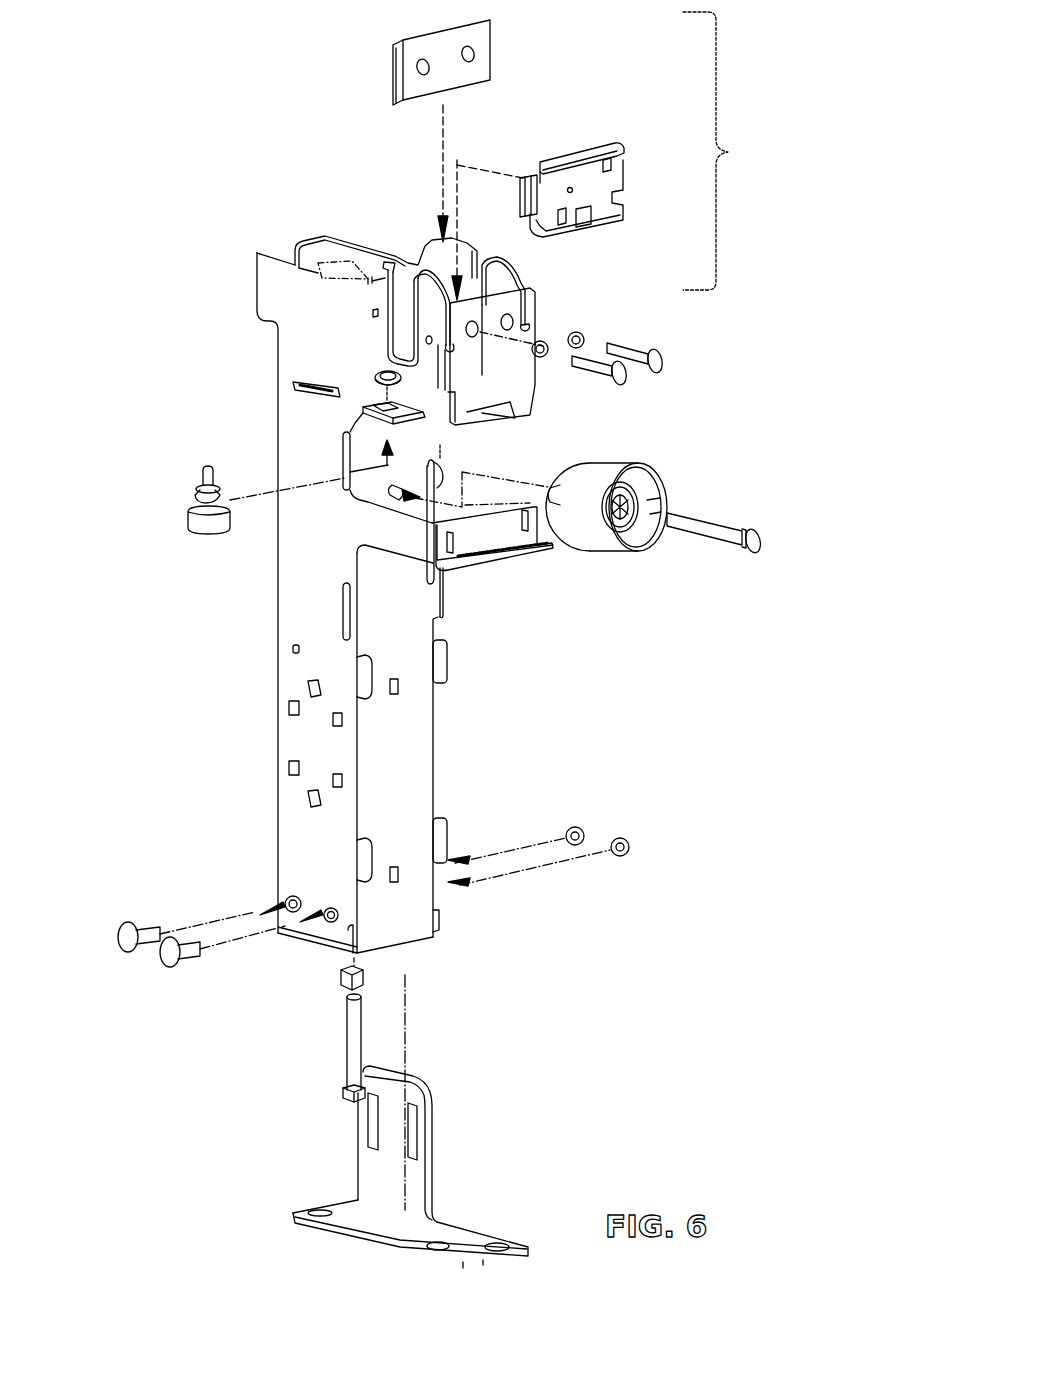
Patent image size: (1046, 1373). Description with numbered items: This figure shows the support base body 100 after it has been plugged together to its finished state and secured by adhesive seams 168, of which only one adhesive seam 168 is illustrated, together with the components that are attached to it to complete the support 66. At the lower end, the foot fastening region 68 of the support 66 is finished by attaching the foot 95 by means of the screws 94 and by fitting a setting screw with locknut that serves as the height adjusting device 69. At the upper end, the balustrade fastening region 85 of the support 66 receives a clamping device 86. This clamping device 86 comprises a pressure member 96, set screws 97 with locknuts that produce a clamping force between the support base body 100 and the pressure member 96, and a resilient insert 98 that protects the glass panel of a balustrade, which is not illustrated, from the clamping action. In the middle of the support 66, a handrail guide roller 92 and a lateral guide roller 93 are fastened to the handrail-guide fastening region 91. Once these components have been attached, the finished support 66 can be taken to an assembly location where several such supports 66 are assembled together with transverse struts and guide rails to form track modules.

The support 66 is at (235, 243).
The foot fastening region 68 is at (462, 1116).
The height adjusting device 69 is at (345, 1040).
The balustrade fastening region 85 is at (397, 231).
The clamping device 86 is at (726, 151).
The handrail-guide fastening region 91 is at (672, 471).
The handrail guide roller 92 is at (617, 465).
The lateral guide roller 93 is at (188, 522).
The screws 94 is at (160, 958).
The foot 95 is at (378, 1225).
The pressure member 96 is at (585, 172).
The set screws 97 is at (616, 332).
The resilient insert 98 is at (483, 43).
The support base body 100 is at (300, 590).
The adhesive seam 168 is at (308, 376).